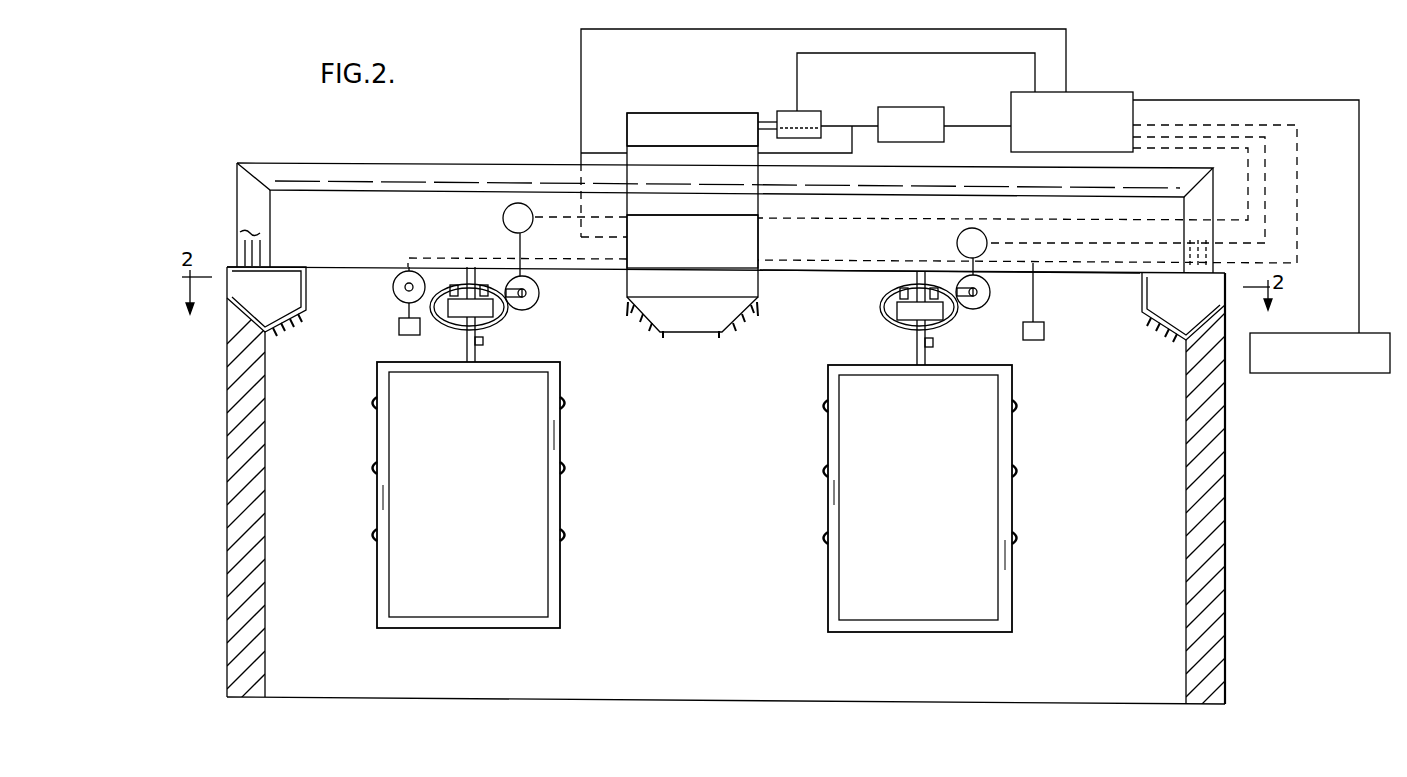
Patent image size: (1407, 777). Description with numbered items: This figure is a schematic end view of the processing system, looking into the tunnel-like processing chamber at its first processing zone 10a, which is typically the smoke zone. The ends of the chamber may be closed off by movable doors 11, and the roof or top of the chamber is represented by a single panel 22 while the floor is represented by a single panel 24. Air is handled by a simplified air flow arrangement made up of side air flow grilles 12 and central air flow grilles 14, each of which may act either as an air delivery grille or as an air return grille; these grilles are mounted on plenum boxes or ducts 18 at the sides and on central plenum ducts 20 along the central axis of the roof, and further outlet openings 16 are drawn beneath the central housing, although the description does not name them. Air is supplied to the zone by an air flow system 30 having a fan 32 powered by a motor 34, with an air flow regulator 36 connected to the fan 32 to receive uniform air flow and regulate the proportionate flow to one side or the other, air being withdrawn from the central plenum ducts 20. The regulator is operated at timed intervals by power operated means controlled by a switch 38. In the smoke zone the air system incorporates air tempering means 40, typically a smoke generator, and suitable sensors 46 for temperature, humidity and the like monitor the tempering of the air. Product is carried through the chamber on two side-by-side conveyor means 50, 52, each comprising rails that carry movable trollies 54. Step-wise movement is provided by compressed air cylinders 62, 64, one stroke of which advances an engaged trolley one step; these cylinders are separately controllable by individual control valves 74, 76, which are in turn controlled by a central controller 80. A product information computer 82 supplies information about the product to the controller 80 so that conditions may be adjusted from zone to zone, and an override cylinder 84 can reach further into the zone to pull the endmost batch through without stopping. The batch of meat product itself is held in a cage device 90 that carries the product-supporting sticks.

The first processing zone 10a is at (1108, 464).
The movable doors 11 is at (227, 427).
The side air flow grilles 12 is at (355, 266).
The central air flow grilles 14 is at (290, 326).
The nozzles 16 is at (638, 310).
The plenum boxes or ducts 18 is at (280, 268).
The central plenum ducts 20 is at (757, 280).
The roof panel 22 is at (824, 275).
The floor panel 24 is at (712, 697).
The air flow system 30 is at (515, 117).
The fan 32 is at (658, 112).
The motor 34 is at (782, 111).
The air flow regulator 36 is at (627, 150).
The switch 38 is at (944, 110).
The air tempering means 40 is at (758, 238).
The sensors 46 is at (399, 326).
The conveyor means 50 is at (483, 314).
The conveyor means 52 is at (935, 314).
The trollies 54 is at (505, 318).
The compressed air cylinder 62 is at (540, 293).
The compressed air cylinder 64 is at (982, 296).
The control valve 74 is at (503, 218).
The control valve 76 is at (957, 243).
The central controller 80 is at (1120, 92).
The product information computer 82 is at (1320, 373).
The override cylinder 84 is at (405, 272).
The cage device 90 is at (470, 628).